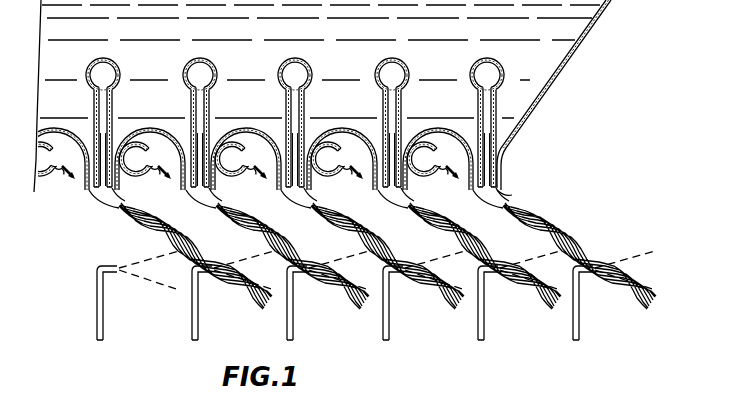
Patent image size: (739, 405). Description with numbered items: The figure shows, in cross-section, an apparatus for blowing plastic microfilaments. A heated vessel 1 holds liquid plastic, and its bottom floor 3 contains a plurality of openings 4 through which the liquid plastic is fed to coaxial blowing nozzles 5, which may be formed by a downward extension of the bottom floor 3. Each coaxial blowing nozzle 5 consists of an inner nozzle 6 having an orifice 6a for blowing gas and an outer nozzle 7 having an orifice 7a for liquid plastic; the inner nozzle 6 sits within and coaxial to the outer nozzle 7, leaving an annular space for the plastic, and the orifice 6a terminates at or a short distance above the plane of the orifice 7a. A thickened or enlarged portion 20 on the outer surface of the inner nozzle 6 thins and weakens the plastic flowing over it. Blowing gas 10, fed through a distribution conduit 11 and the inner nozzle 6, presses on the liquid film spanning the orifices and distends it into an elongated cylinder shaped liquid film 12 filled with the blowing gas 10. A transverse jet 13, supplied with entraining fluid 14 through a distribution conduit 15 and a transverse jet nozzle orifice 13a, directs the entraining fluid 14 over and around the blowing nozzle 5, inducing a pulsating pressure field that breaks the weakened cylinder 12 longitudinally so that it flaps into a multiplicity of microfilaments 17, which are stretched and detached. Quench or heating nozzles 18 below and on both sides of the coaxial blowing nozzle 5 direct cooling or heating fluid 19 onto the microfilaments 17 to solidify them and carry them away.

The vessel 1 is at (562, 83).
The bottom floor 3 is at (236, 130).
The openings 4 is at (123, 127).
The coaxial blowing nozzle 5 is at (505, 178).
The inner nozzle 6 is at (497, 110).
The orifice of inner nozzle 6a is at (400, 187).
The outer nozzle 7 is at (500, 185).
The orifice of outer nozzle 7a is at (413, 200).
The blowing gas 10 is at (88, 72).
The distribution conduit 11 is at (117, 64).
The elongated cylinder shaped liquid film 12 is at (508, 197).
The transverse jet 13 is at (152, 160).
The transverse jet nozzle orifice 13a is at (152, 174).
The entraining fluid 14 is at (262, 178).
The distribution conduit 15 is at (226, 168).
The microfilaments 17 is at (372, 236).
The quench or heating nozzles 18 is at (305, 264).
The cooling or heating fluid 19 is at (344, 259).
The thickened or enlarged portion 20 is at (91, 142).